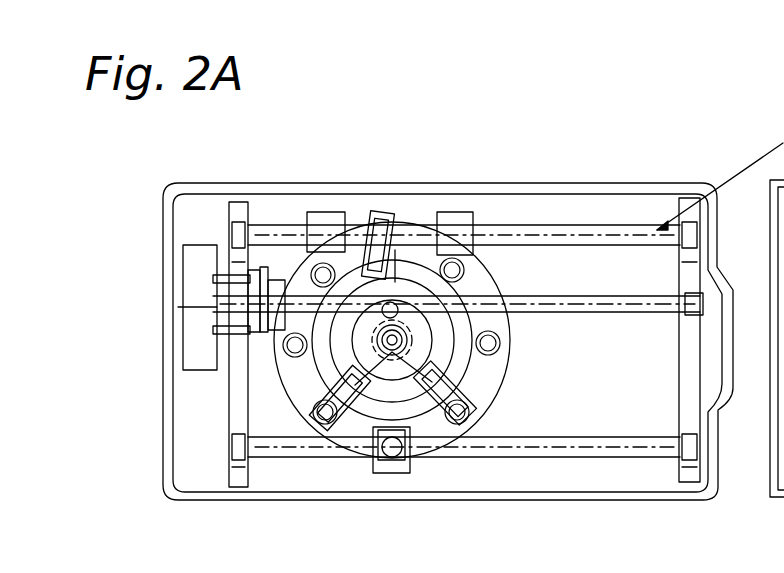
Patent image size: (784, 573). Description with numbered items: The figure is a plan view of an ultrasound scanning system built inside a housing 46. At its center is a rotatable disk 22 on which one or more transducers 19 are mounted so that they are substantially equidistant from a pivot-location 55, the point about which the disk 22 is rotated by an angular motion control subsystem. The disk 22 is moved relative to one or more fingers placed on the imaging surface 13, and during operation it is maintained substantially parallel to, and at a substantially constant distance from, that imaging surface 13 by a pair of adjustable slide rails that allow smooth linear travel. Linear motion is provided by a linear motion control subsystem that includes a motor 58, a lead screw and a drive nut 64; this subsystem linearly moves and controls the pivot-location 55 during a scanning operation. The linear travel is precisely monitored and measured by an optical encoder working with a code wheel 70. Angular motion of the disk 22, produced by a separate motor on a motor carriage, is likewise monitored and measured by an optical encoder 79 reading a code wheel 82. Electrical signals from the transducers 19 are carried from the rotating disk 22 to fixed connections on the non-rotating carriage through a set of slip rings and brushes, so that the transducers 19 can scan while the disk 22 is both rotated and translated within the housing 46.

The imaging surface 13 is at (140, 350).
The transducers 19 is at (436, 293).
The rotatable disk 22 is at (464, 490).
The housing 46 is at (306, 180).
The pivot-location 55 is at (470, 355).
The motor 58 is at (192, 277).
The drive nut 64 is at (437, 228).
The code wheel 70 is at (404, 500).
The optical encoder 79 is at (264, 457).
The code wheel 82 is at (466, 223).